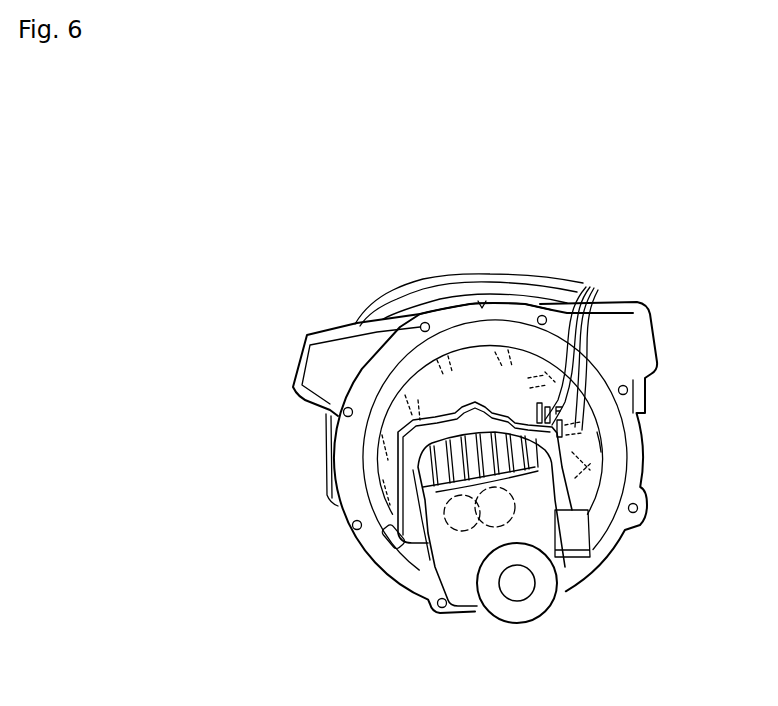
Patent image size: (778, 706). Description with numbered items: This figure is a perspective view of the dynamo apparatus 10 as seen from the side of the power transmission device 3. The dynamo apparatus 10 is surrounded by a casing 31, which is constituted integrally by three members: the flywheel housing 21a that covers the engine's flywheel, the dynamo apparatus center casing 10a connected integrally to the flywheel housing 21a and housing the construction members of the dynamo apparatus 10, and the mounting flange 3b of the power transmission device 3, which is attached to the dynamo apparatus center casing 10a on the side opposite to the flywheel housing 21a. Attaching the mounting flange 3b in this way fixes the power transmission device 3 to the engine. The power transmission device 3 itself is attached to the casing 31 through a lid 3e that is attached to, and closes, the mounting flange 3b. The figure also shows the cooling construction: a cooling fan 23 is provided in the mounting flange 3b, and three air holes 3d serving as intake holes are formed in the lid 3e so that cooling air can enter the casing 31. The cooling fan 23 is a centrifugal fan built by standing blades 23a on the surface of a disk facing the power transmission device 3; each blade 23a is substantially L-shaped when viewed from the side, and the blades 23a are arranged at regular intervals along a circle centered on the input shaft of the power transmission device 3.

The power transmission device 3 is at (563, 592).
The mounting flange 3b is at (523, 306).
The air holes 3d is at (572, 347).
The lid 3e is at (597, 437).
The dynamo apparatus 10 is at (636, 263).
The dynamo apparatus center casing 10a is at (493, 285).
The flywheel housing 21a is at (460, 273).
The cooling fan 23 is at (564, 512).
The blades 23a is at (600, 447).
The casing 31 is at (469, 236).